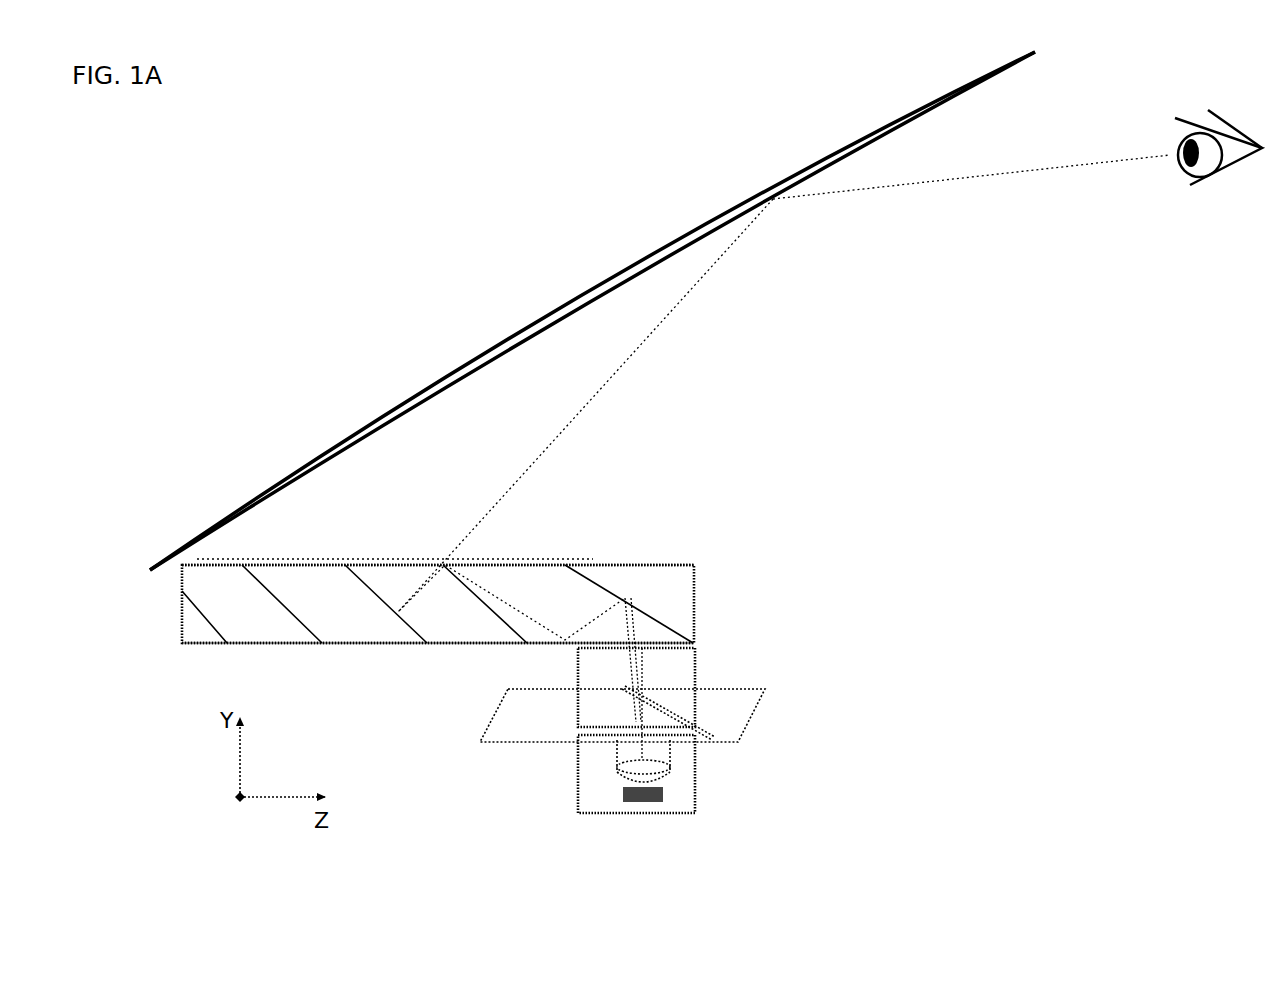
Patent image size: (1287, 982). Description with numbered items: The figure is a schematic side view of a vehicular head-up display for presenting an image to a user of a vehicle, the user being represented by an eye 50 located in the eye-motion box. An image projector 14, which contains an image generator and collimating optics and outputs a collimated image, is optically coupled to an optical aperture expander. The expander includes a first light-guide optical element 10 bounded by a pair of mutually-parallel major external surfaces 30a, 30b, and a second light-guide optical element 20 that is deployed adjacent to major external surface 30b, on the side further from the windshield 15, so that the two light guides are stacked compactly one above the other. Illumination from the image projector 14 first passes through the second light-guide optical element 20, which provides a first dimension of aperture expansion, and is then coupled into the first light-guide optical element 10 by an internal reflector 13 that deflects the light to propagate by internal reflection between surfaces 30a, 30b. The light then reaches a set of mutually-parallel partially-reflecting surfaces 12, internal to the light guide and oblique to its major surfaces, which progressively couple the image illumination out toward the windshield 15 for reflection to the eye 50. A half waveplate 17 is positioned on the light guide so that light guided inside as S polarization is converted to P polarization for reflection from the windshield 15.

The light-guide optical element 10 is at (553, 608).
The partially-reflecting surfaces 12 is at (373, 599).
The internal reflector 13 is at (650, 609).
The image projector 14 is at (636, 792).
The windshield 15 is at (594, 296).
The half waveplate 17 is at (395, 541).
The second light-guide optical element 20 is at (658, 699).
The major external surface 30a is at (220, 560).
The major external surface 30b is at (200, 648).
The eye of the user 50 is at (1212, 160).